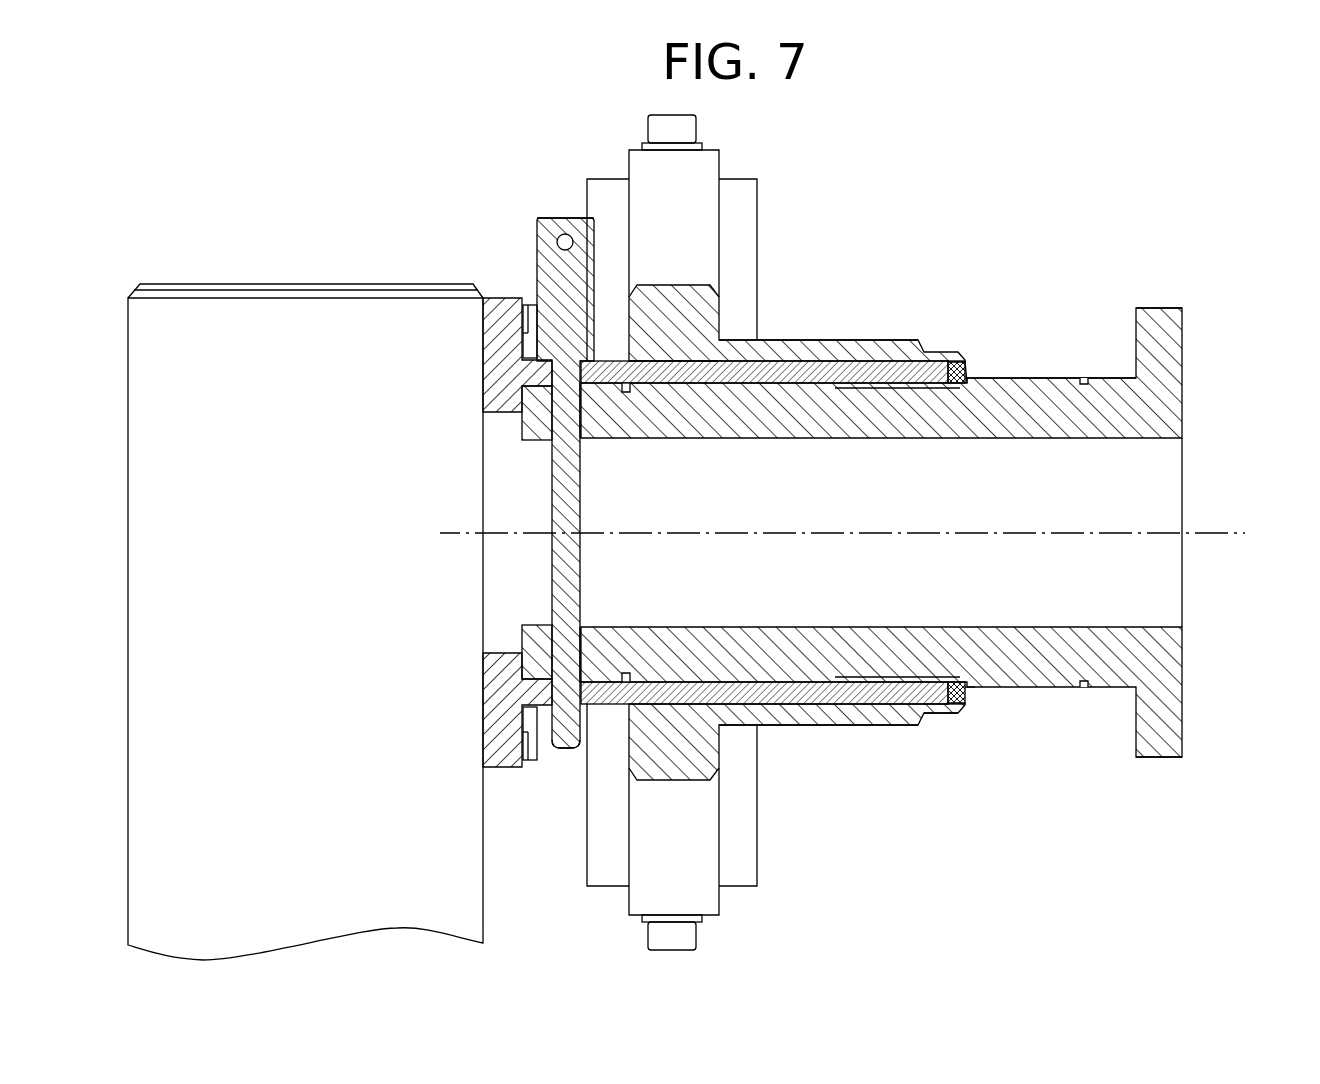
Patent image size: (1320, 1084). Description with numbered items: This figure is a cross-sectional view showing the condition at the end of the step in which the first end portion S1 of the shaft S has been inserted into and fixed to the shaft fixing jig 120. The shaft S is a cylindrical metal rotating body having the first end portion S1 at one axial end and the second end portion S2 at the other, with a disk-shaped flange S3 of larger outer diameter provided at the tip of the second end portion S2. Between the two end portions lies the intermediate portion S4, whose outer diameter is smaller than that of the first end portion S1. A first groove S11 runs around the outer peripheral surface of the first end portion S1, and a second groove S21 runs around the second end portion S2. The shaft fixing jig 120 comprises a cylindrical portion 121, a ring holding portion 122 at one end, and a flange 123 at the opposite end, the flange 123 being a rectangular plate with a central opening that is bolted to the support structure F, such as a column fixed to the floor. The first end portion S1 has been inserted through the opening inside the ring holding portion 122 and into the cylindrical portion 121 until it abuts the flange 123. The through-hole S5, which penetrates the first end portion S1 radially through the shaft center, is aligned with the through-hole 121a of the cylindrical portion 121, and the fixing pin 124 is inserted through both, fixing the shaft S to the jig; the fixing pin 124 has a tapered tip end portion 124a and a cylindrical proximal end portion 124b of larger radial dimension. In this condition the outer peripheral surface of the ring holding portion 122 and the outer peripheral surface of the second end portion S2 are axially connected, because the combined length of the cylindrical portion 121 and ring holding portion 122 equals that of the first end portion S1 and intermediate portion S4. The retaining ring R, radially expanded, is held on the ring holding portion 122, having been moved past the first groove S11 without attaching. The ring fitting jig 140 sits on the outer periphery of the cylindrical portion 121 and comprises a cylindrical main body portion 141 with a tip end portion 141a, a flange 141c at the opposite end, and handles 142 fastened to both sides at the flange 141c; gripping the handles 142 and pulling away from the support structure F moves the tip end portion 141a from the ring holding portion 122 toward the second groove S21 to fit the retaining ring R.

The support structure F is at (305, 325).
The shaft S is at (1200, 372).
The first end portion S1 is at (688, 380).
The first groove S11 is at (625, 385).
The second end portion S2 is at (1035, 378).
The second groove S21 is at (1086, 378).
The flange S3 is at (1150, 308).
The intermediate portion S4 is at (835, 385).
The through-hole S5 is at (570, 398).
The retaining ring R is at (968, 362).
The shaft fixing jig 120 is at (808, 352).
The cylindrical portion 121 is at (830, 705).
The through-hole 121a is at (556, 350).
The ring holding portion 122 is at (965, 388).
The flange 123 is at (500, 298).
The fixing pin 124 is at (550, 478).
The tip end portion 124a is at (565, 752).
The proximal end portion 124b is at (552, 218).
The ring fitting jig 140 is at (913, 340).
The main body portion 141 is at (882, 722).
The tip end portion 141a is at (975, 382).
The flange 141c is at (680, 293).
The handle 142 is at (733, 161).